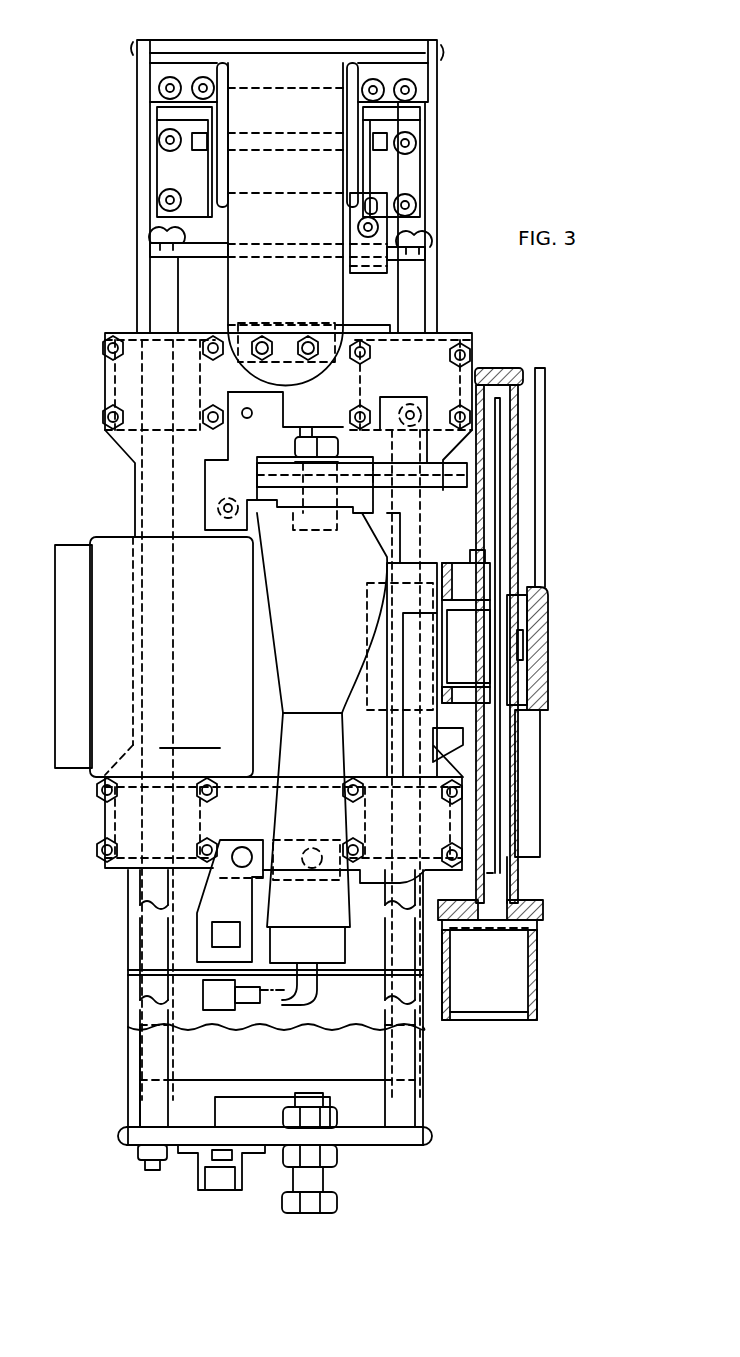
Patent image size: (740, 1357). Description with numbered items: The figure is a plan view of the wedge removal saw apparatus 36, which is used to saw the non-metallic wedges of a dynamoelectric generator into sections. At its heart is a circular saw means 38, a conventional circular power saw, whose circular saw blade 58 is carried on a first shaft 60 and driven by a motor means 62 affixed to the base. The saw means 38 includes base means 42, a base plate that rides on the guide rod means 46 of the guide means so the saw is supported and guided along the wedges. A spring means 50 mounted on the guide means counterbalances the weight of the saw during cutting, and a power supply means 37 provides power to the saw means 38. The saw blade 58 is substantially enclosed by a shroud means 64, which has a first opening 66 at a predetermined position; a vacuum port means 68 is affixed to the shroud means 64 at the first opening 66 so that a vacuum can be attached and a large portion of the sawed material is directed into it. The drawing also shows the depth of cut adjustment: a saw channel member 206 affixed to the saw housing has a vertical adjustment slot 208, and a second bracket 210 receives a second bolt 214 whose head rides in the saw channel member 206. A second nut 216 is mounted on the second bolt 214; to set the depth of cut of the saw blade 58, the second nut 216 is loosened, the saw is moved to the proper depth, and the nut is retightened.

The wedge removal saw apparatus 36 is at (497, 161).
The power supply means 37 is at (207, 994).
The circular saw means 38 is at (127, 563).
The base means 42 is at (153, 385).
The guide rod means 46 is at (150, 1068).
The spring means 50 is at (327, 100).
The circular saw blade 58 is at (505, 443).
The first shaft 60 is at (520, 641).
The motor means 62 is at (220, 745).
The shroud means 64 is at (510, 873).
The first opening 66 is at (487, 913).
The vacuum port means 68 is at (533, 1008).
The saw channel member 206 is at (283, 508).
The vertical adjustment slot 208 is at (285, 548).
The second bracket 210 is at (268, 480).
The second bolt 214 is at (318, 432).
The second nut 216 is at (338, 446).